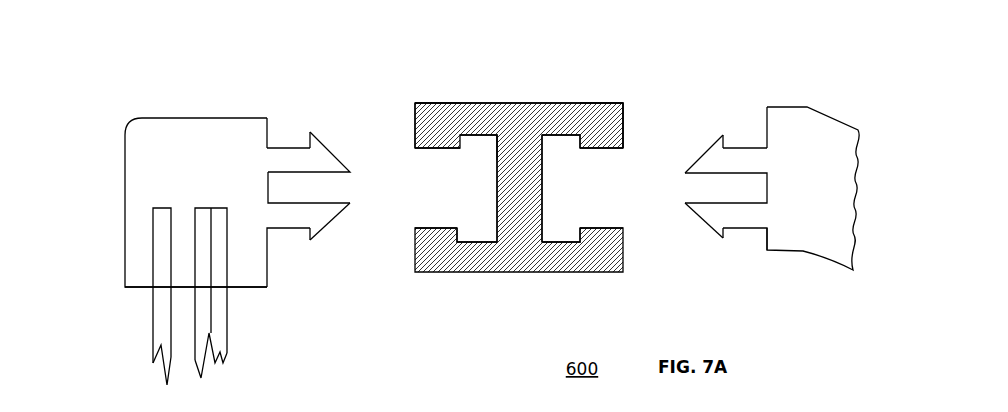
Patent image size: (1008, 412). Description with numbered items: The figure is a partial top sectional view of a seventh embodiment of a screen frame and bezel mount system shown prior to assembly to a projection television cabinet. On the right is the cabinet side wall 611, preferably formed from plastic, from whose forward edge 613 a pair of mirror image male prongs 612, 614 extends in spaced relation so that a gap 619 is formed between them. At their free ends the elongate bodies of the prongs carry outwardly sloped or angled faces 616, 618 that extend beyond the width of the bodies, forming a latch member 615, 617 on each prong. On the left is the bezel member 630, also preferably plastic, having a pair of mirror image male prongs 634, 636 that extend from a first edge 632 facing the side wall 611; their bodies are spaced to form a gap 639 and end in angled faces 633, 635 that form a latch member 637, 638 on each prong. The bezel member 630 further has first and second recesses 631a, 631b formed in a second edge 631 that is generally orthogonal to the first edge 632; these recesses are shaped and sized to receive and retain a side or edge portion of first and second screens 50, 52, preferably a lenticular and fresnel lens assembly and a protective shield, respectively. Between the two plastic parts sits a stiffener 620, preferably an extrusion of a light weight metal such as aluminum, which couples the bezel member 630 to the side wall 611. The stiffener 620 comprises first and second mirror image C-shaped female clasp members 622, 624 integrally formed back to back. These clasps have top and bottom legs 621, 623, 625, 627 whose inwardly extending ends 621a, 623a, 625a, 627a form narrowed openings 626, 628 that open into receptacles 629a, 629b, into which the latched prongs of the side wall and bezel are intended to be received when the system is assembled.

The cabinet side wall 611 is at (853, 177).
The male prong 612 is at (752, 147).
The forward edge 613 is at (762, 107).
The male prong 614 is at (750, 228).
The latch member 615 is at (725, 136).
The angled face 616 is at (702, 150).
The latch member 617 is at (725, 240).
The angled face 618 is at (698, 217).
The gap 619 is at (753, 188).
The stiffener 620 is at (515, 272).
The top leg 621 is at (580, 102).
The inwardly extending end 621a is at (600, 148).
The C-shaped female clasp member 622 is at (563, 102).
The bottom leg 623 is at (558, 240).
The inwardly extending end 623a is at (592, 228).
The C-shaped female clasp member 624 is at (472, 100).
The top leg 625 is at (450, 102).
The inwardly extending end 625a is at (432, 148).
The narrowed opening 626 is at (612, 180).
The bottom leg 627 is at (468, 240).
The inwardly extending end 627a is at (425, 228).
The narrowed opening 628 is at (425, 180).
The receptacle 629a is at (551, 145).
The receptacle 629b is at (485, 140).
The bezel member 630 is at (250, 247).
The second edge 631 is at (130, 288).
The first recess 631a is at (222, 275).
The second recess 631b is at (162, 272).
The first edge 632 is at (268, 127).
The angled face 633 is at (307, 133).
The male prong 634 is at (290, 147).
The angled face 635 is at (330, 222).
The male prong 636 is at (283, 230).
The latch member 637 is at (334, 156).
The latch member 638 is at (312, 243).
The gap 639 is at (278, 192).
The first screen 50 is at (227, 353).
The second screen 52 is at (153, 363).